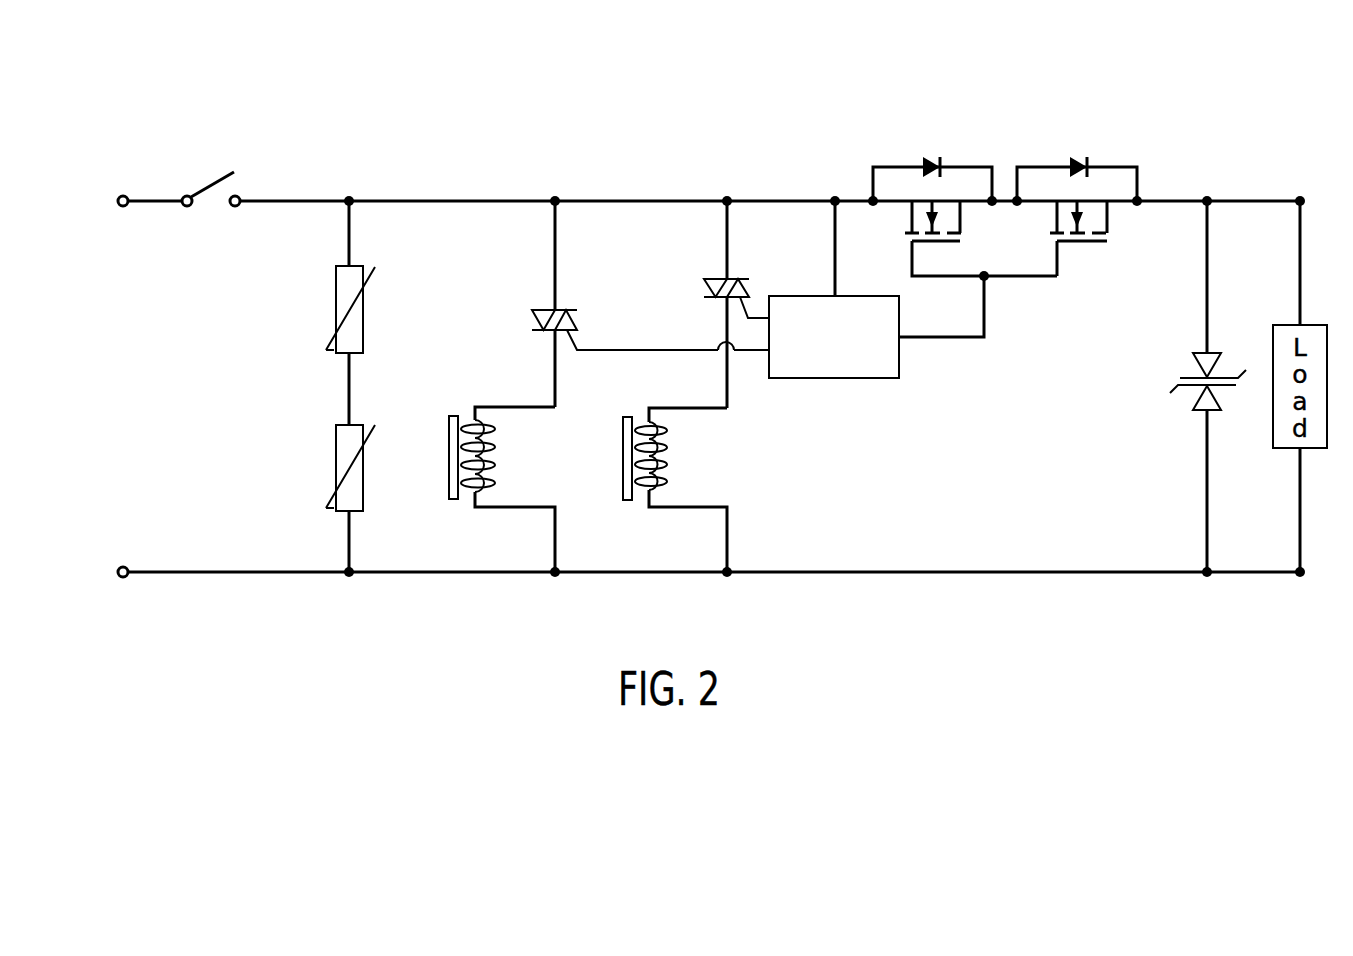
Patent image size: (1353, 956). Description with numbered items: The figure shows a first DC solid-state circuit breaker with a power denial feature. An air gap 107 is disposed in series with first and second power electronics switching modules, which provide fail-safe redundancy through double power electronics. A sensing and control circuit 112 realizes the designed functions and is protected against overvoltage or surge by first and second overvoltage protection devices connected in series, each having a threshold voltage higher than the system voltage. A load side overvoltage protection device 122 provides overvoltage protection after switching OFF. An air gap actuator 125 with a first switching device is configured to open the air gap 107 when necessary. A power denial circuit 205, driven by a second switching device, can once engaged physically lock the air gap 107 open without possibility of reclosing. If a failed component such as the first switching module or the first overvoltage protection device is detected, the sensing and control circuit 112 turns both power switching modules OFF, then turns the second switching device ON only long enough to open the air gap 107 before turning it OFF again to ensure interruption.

The air gap 107 is at (208, 207).
The power denial circuit 205 is at (439, 446).
The air gap actuator 125 is at (688, 407).
The sensing and control circuit 112 is at (835, 378).
The load side overvoltage protection device D1 122 is at (1197, 366).